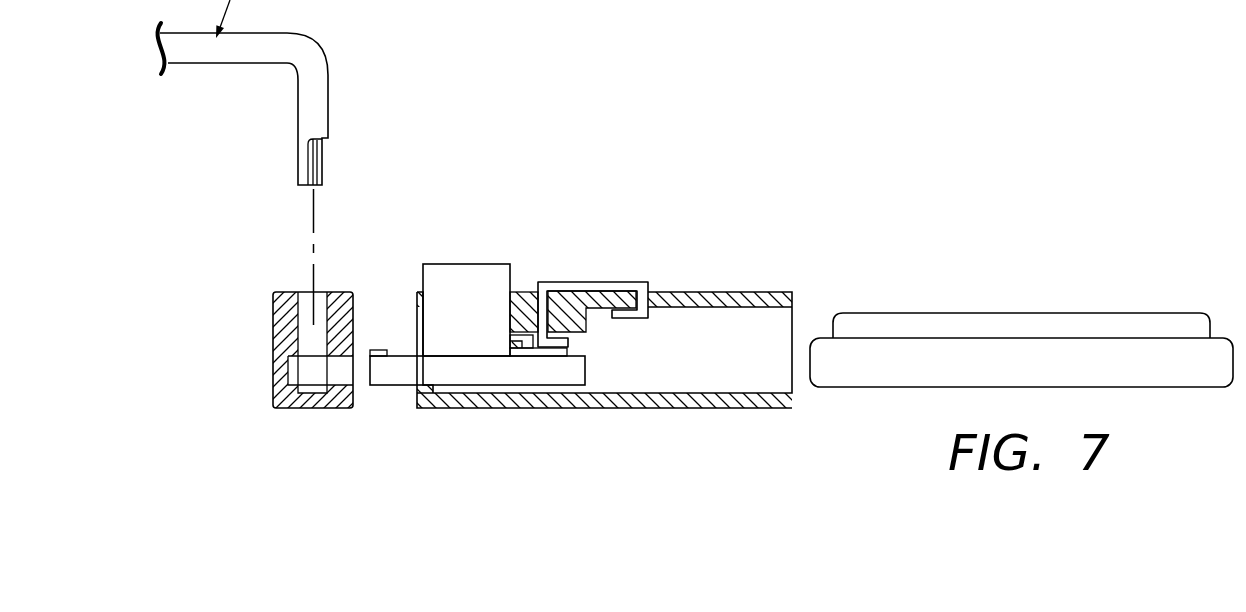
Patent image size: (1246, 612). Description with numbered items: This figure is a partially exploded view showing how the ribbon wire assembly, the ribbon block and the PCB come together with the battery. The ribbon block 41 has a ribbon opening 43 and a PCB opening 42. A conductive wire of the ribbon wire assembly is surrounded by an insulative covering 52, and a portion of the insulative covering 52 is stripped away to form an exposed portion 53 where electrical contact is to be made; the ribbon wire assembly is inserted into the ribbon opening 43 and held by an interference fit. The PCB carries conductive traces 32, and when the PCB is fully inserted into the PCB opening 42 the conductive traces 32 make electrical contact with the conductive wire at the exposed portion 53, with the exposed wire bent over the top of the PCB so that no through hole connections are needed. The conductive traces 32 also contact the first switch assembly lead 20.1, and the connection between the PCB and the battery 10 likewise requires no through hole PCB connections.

The battery 10 is at (1168, 316).
The first switch assembly lead 20.1 is at (522, 344).
The conductive trace 32 is at (376, 350).
The ribbon block 41 is at (274, 345).
The PCB opening 42 is at (347, 378).
The ribbon opening 43 is at (306, 298).
The insulative covering 52 is at (327, 66).
The exposed portion 53 is at (332, 160).